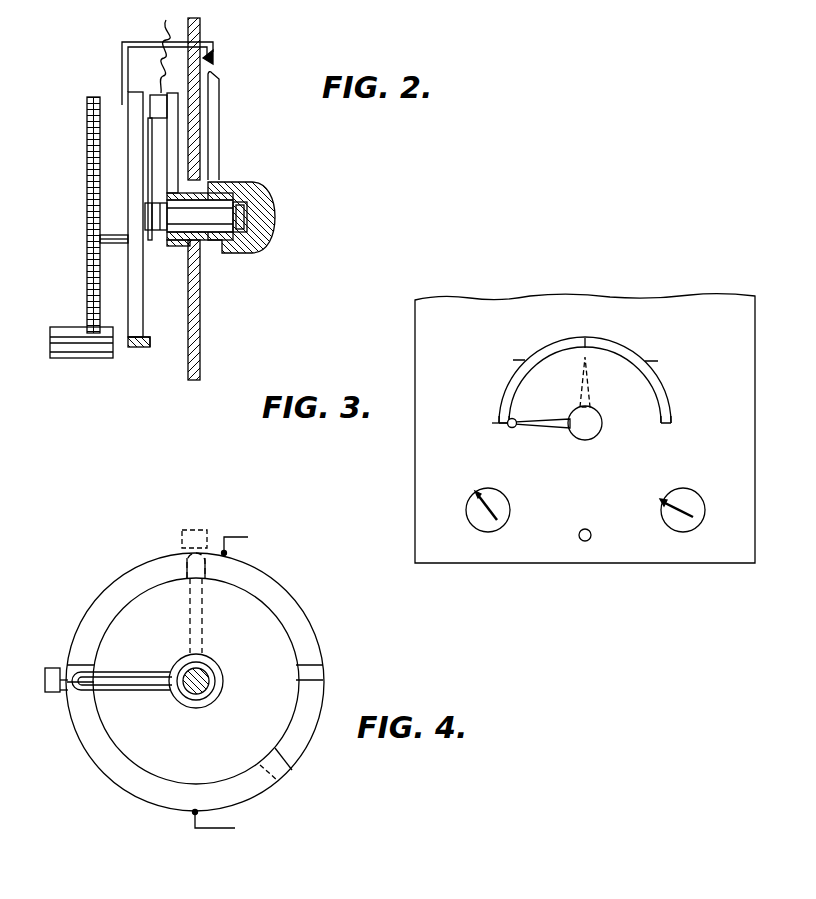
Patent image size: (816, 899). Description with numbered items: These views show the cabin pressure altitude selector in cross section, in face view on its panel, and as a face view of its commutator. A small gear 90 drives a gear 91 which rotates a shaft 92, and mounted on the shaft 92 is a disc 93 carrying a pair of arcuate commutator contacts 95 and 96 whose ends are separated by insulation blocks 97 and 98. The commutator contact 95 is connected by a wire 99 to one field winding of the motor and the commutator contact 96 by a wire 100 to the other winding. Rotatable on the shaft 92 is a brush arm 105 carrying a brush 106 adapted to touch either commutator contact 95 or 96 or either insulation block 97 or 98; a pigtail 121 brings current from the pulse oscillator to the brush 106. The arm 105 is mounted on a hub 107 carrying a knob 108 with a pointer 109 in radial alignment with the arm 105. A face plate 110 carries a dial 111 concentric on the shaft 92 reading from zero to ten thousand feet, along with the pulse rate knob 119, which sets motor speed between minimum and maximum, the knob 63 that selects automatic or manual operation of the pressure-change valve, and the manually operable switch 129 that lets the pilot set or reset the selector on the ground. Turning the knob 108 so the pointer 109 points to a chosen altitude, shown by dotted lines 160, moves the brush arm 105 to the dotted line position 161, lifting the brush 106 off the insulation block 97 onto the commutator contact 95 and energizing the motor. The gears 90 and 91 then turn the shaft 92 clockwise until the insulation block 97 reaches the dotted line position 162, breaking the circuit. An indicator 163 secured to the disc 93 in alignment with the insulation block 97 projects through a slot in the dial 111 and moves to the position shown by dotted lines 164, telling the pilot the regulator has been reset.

In FIG. 3, the knob 63 is at (688, 497).
In FIG. 2, the small gear 90 is at (75, 358).
In FIG. 2, the gear 91 is at (87, 165).
In FIG. 2, the shaft 92 is at (110, 244).
In FIG. 2, the disc 93 is at (135, 348).
In FIG. 4, the disc 93 is at (241, 646).
In FIG. 2, the commutator contact 95 is at (147, 125).
In FIG. 4, the commutator contact 95 is at (278, 600).
In FIG. 2, the commutator contact 96 is at (148, 340).
In FIG. 4, the commutator contact 96 is at (106, 757).
In FIG. 2, the insulation block 97 is at (144, 202).
In FIG. 4, the insulation block 97 is at (70, 692).
In FIG. 4, the insulation block 98 is at (312, 678).
In FIG. 4, the wire 99 is at (248, 538).
In FIG. 4, the wire 100 is at (207, 829).
In FIG. 2, the brush arm 105 is at (172, 136).
In FIG. 4, the brush arm 105 is at (112, 680).
In FIG. 2, the brush 106 is at (160, 106).
In FIG. 2, the hub 107 is at (181, 246).
In FIG. 4, the hub 107 is at (194, 703).
In FIG. 2, the knob 108 is at (258, 192).
In FIG. 3, the knob 108 is at (600, 423).
In FIG. 2, the pointer 109 is at (222, 144).
In FIG. 3, the pointer 109 is at (543, 417).
In FIG. 2, the face plate 110 is at (195, 314).
In FIG. 3, the face plate 110 is at (720, 306).
In FIG. 3, the dial 111 is at (508, 383).
In FIG. 3, the pulse rate knob 119 is at (483, 528).
In FIG. 2, the pigtail 121 is at (165, 19).
In FIG. 3, the manually operable switch 129 is at (578, 537).
In FIG. 3, the dotted lines 160 is at (592, 388).
In FIG. 4, the dotted line position 161 is at (204, 626).
In FIG. 4, the dotted line position 162 is at (181, 565).
In FIG. 2, the indicator 163 is at (212, 55).
In FIG. 3, the indicator 163 is at (510, 427).
In FIG. 4, the indicator 163 is at (46, 670).
In FIG. 4, the dotted lines 164 is at (200, 527).